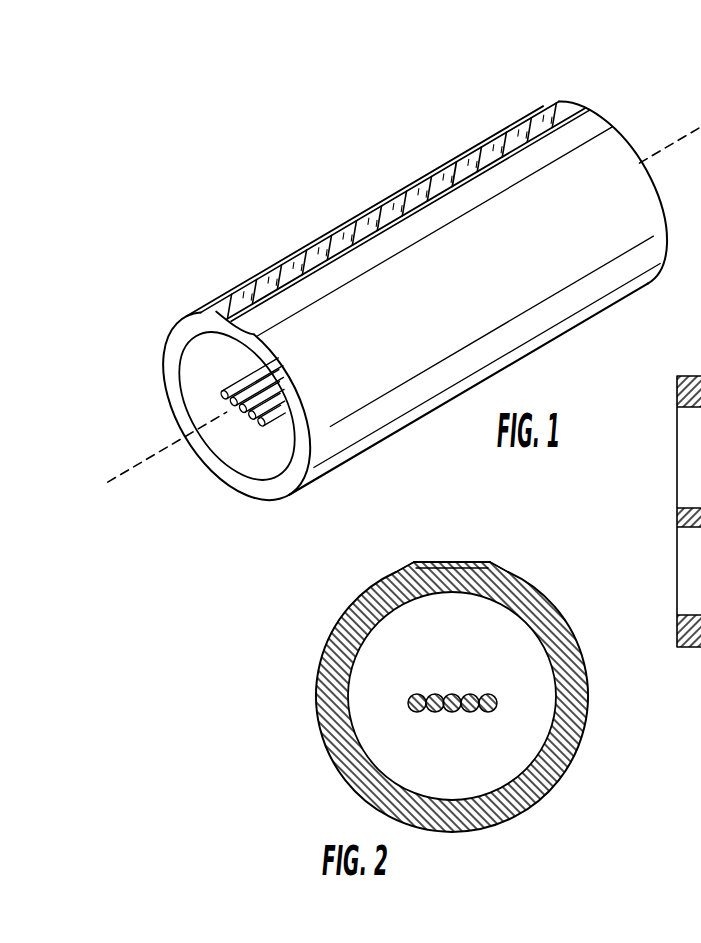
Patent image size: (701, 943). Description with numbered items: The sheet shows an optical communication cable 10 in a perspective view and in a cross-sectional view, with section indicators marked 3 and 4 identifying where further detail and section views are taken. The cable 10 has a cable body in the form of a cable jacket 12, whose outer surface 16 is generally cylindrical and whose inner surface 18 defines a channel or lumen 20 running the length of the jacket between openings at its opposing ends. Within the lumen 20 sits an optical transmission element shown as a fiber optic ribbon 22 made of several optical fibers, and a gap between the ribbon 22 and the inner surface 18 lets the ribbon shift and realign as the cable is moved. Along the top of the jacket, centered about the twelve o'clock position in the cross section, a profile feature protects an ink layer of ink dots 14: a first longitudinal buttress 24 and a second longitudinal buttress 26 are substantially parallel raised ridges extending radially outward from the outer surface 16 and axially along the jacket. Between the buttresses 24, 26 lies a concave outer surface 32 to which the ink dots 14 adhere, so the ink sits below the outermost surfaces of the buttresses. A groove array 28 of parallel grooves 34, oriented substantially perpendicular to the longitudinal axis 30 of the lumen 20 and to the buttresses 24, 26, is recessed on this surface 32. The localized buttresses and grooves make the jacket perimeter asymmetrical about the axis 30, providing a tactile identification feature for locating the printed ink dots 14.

In FIG. 1, the cable 10 is at (382, 184).
In FIG. 1, the cable jacket 12 is at (170, 377).
In FIG. 2, the cable jacket 12 is at (557, 652).
In FIG. 2, the ink dots 14 is at (458, 562).
In FIG. 1, the outer surface 16 is at (335, 408).
In FIG. 2, the outer surface 16 is at (591, 703).
In FIG. 2, the inner surface 18 is at (356, 731).
In FIG. 1, the lumen 20 is at (256, 453).
In FIG. 2, the lumen 20 is at (506, 726).
In FIG. 1, the fiber optic ribbon 22 is at (240, 392).
In FIG. 2, the fiber optic ribbon 22 is at (407, 703).
In FIG. 1, the first longitudinal buttress 24 is at (578, 107).
In FIG. 2, the first longitudinal buttress 24 is at (405, 570).
In FIG. 1, the second longitudinal buttress 26 is at (613, 127).
In FIG. 2, the second longitudinal buttress 26 is at (495, 568).
In FIG. 1, the groove array 28 is at (508, 152).
In FIG. 1, the longitudinal axis 30 is at (698, 128).
In FIG. 1, the outer surface 32 is at (228, 298).
In FIG. 1, the grooves 34 is at (234, 312).
In FIG. 2, the section view indicator 3 is at (475, 514).
In FIG. 2, the section line 4- 4 is at (452, 532).